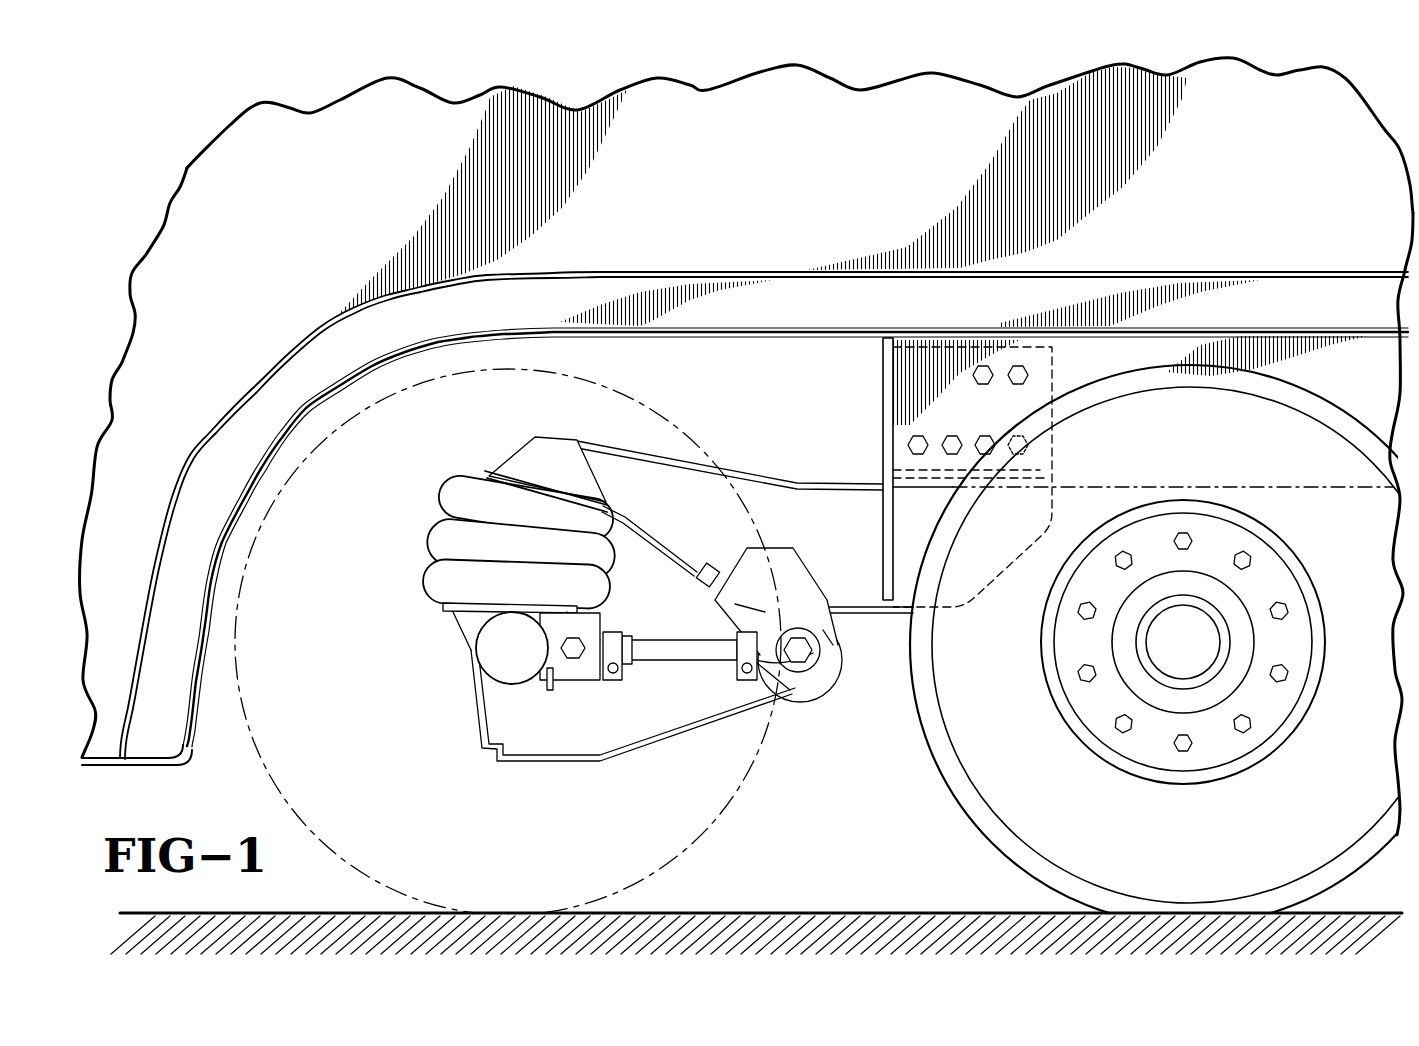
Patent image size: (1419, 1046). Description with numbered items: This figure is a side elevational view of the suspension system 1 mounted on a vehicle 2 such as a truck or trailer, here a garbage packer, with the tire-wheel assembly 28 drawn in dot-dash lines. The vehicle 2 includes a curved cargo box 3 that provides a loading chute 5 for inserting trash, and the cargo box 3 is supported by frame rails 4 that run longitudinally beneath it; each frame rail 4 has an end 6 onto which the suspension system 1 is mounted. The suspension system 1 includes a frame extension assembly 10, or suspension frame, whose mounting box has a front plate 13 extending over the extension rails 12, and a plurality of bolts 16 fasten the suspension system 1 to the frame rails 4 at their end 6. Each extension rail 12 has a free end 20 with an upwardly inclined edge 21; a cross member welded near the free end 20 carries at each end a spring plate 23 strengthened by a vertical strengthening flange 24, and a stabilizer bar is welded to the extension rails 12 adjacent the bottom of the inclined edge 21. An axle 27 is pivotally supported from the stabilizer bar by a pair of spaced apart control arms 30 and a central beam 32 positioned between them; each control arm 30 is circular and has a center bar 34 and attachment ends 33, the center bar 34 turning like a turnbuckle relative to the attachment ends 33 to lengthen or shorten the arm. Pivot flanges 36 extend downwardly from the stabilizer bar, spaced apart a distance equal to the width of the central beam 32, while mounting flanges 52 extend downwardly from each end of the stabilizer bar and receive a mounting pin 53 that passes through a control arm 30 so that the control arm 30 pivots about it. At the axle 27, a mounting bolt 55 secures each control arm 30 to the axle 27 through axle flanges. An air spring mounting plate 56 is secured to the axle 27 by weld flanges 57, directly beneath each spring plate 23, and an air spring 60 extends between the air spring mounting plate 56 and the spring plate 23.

The suspension system 1 is at (614, 585).
The vehicle 2 is at (200, 207).
The cargo box 3 is at (1330, 120).
The frame rails 4 is at (1358, 386).
The loading chute 5 is at (199, 351).
The end 6 is at (908, 338).
The frame extension assembly 10 is at (730, 480).
The extension rails 12 is at (860, 583).
The front plate 13 is at (883, 369).
The bolts 16 is at (984, 367).
The free end 20 is at (605, 473).
The upwardly inclined edge 21 is at (663, 528).
The spring plate 23 is at (490, 474).
The vertical strengthening flange 24 is at (543, 447).
The axle 27 is at (508, 687).
The tire-wheel assembly 28 is at (712, 852).
The control arms 30 is at (697, 662).
The central beam 32 is at (600, 740).
The attachment ends 33 is at (613, 633).
The center bar 34 is at (673, 643).
The pivot flanges 36 is at (810, 687).
The mounting flanges 52 is at (803, 577).
The mounting pin 53 is at (798, 652).
The mounting bolt 55 is at (573, 657).
The air spring mounting plate 56 is at (453, 611).
The weld flanges 57 is at (460, 637).
The air spring 60 is at (440, 533).